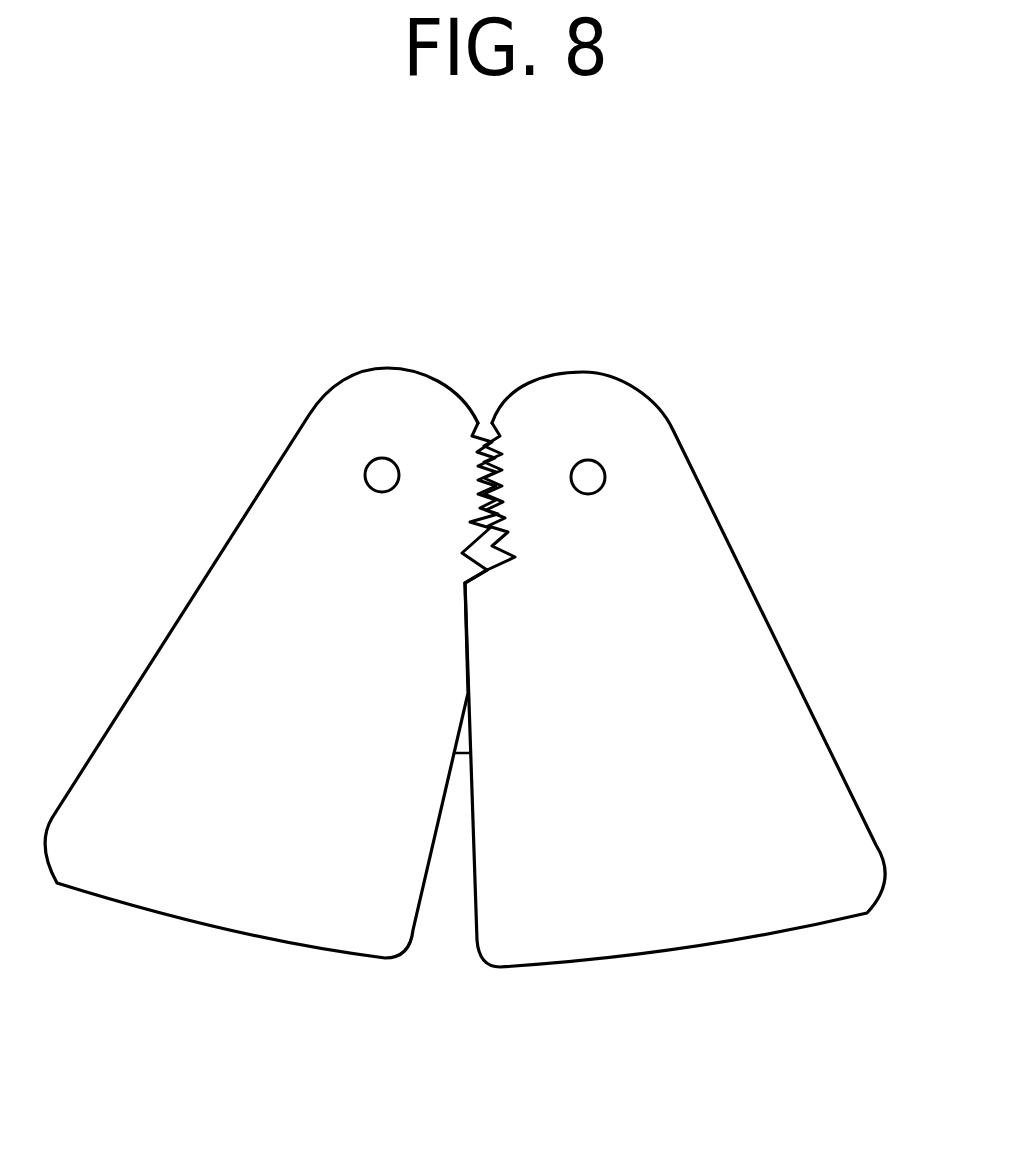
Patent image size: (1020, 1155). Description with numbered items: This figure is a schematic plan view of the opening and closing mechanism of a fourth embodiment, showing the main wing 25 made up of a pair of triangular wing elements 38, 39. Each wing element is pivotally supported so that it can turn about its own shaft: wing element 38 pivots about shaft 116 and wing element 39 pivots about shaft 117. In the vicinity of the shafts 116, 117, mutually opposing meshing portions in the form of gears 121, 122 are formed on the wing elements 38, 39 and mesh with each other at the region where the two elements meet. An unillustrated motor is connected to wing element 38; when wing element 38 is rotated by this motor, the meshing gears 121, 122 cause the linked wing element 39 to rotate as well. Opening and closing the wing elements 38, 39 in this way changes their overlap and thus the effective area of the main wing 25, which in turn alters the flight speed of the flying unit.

The main wing 25 is at (683, 377).
The wing element 38 is at (706, 583).
The wing element 39 is at (260, 554).
The shaft 116 is at (603, 469).
The shaft 117 is at (369, 463).
The gear 121 is at (503, 463).
The gear 122 is at (473, 462).